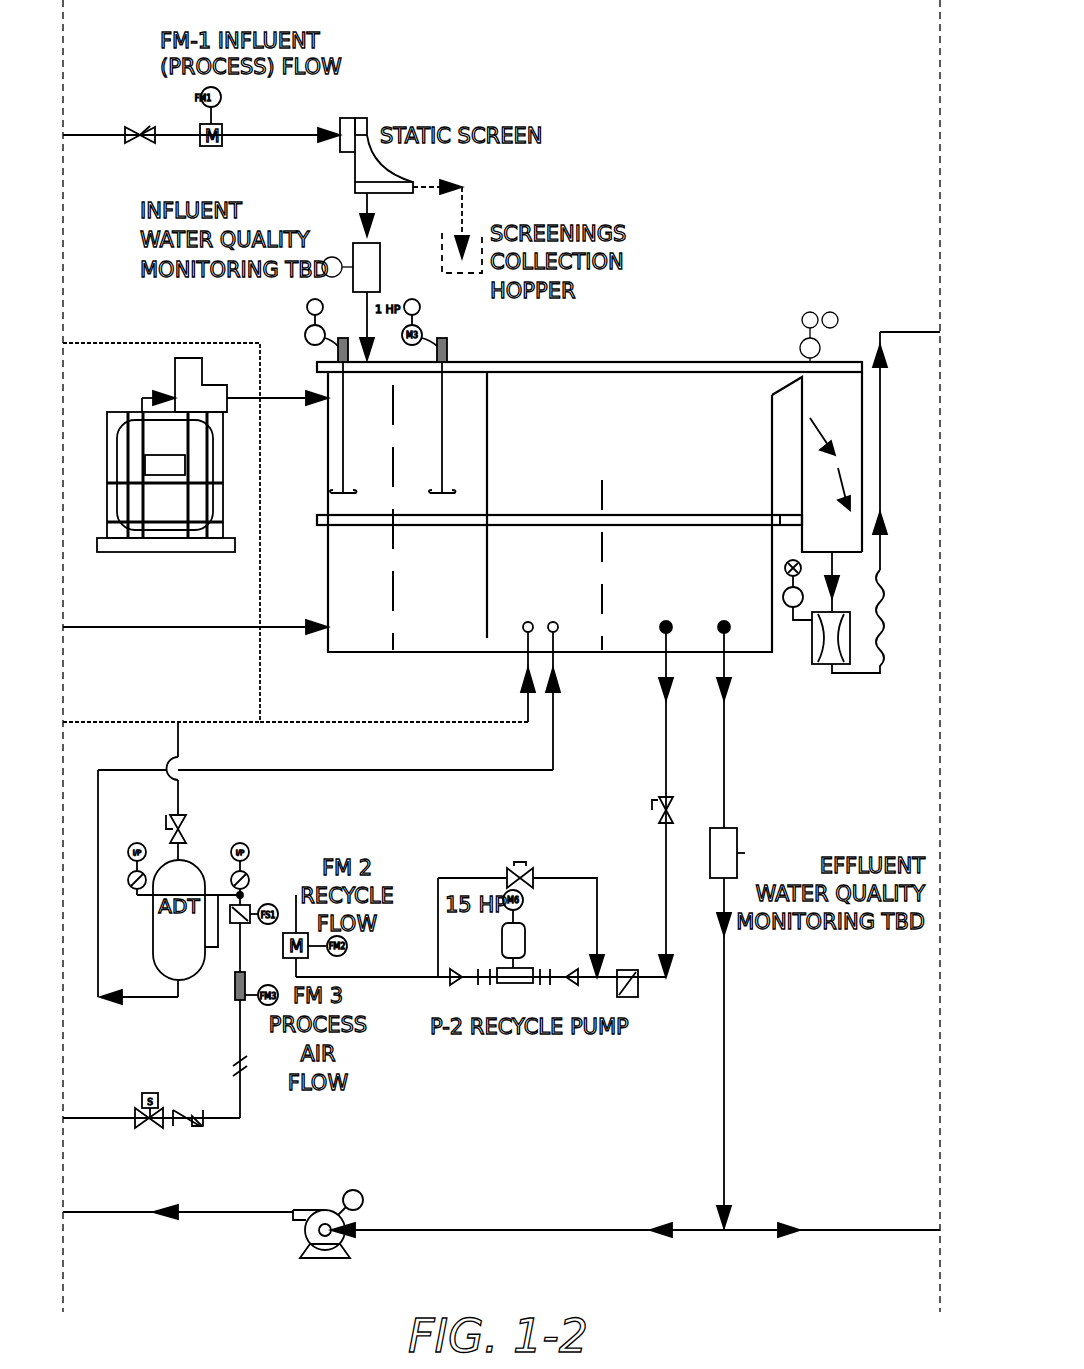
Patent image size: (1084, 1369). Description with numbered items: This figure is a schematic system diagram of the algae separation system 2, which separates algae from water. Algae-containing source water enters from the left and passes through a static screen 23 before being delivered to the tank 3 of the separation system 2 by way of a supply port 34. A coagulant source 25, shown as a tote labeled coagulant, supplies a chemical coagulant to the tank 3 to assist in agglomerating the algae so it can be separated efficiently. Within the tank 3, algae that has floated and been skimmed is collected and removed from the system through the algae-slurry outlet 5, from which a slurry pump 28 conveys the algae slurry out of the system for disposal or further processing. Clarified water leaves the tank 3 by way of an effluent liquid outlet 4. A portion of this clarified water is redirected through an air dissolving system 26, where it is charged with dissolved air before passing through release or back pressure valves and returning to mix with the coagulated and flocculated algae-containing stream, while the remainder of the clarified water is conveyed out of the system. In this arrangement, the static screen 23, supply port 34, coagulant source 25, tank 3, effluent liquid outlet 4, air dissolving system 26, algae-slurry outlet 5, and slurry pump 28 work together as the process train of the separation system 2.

The algae separation system 2 is at (655, 352).
The tank 3 is at (693, 358).
The effluent liquid outlet 4 is at (712, 658).
The algae-slurry outlet 5 is at (860, 574).
The static screen 23 is at (353, 118).
The coagulant source 25 is at (107, 432).
The air dissolving system 26 is at (410, 1141).
The slurry pump 28 is at (853, 650).
The supply port 34 is at (330, 355).